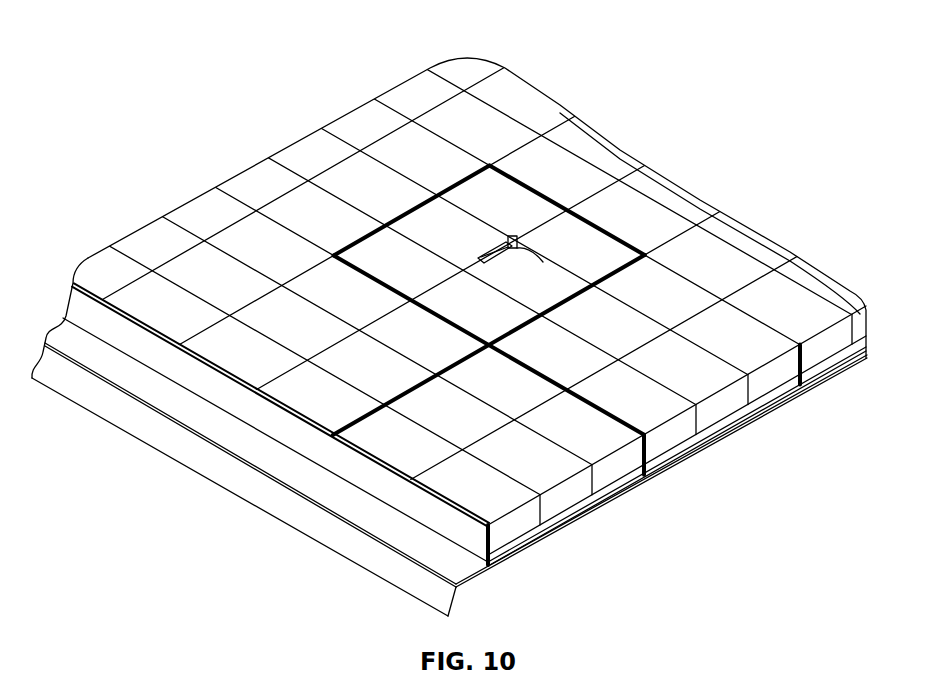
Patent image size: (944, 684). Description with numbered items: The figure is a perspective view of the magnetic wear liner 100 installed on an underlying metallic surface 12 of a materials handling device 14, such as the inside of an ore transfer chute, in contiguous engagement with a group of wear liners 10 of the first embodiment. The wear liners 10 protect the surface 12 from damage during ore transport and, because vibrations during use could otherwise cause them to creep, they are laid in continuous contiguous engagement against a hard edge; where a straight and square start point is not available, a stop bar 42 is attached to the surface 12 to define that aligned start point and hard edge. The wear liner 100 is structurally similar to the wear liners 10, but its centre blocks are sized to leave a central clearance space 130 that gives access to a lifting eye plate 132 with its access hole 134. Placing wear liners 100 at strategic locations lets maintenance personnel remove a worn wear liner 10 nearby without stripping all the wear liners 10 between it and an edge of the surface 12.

The wear liner 10 is at (392, 205).
The magnetic wear liner 100 is at (592, 255).
The central clearance space 130 is at (514, 200).
The lifting eye plate 132 is at (518, 249).
The access hole 134 is at (498, 258).
The underlying metallic surface 12 is at (762, 410).
The materials handling device 14 is at (647, 487).
The stop bar 42 is at (305, 480).